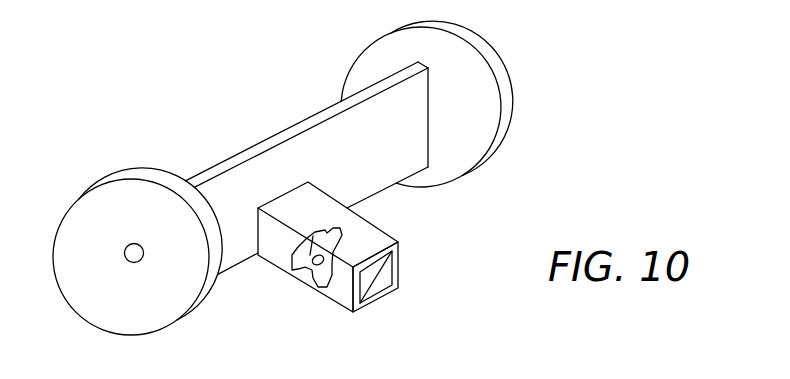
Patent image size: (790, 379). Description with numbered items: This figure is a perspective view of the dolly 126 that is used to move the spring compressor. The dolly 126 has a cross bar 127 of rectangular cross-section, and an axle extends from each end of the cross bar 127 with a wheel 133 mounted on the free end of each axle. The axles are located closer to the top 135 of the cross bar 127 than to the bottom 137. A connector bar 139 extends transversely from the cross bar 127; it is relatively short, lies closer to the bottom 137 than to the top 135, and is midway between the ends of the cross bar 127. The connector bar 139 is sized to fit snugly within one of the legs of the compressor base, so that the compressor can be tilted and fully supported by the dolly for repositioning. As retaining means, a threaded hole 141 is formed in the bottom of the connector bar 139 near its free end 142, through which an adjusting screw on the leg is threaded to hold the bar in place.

The dolly 126 is at (217, 97).
The cross bar 127 is at (328, 110).
The wheel 133 is at (511, 107).
The top of the cross bar 135 is at (258, 153).
The bottom of the cross bar 137 is at (372, 202).
The connector bar 139 is at (388, 302).
The threaded hole 141 is at (315, 266).
The free end of the connector bar 142 is at (399, 267).